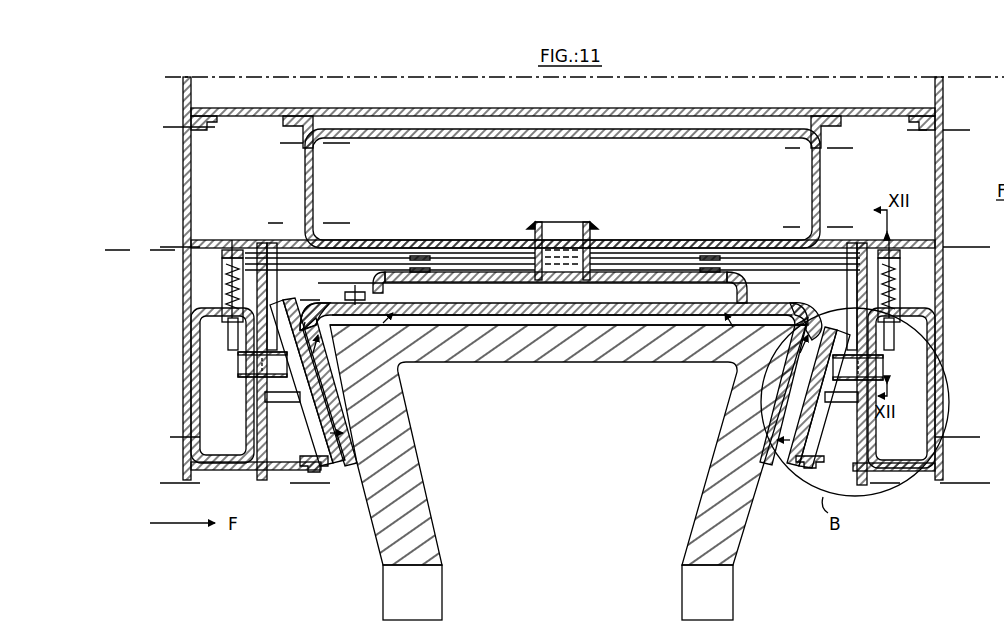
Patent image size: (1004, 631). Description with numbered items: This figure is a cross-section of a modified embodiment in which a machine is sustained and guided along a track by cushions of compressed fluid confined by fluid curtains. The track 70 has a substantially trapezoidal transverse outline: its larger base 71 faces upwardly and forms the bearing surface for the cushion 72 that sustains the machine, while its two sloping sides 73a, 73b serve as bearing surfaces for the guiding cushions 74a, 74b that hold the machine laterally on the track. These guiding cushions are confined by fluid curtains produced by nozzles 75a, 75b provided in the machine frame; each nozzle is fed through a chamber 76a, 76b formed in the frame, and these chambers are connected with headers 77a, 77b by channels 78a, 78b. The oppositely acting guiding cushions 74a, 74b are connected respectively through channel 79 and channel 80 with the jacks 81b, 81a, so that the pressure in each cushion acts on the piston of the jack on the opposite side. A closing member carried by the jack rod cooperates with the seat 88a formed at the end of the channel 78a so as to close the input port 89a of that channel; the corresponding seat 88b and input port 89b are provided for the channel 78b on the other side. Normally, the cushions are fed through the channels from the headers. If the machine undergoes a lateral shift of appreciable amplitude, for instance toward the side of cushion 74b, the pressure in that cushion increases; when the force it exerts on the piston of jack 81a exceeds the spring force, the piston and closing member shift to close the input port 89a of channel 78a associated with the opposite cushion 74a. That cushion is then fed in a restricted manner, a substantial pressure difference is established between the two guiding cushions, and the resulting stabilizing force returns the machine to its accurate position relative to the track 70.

The track 70 is at (703, 468).
The larger base 71 is at (508, 319).
The cushion 72 is at (545, 322).
The sloping side 73a is at (748, 510).
The sloping side 73b is at (373, 533).
The guiding cushion 74a is at (775, 412).
The guiding cushion 74b is at (345, 412).
The nozzle 75a is at (815, 345).
The nozzle 75b is at (318, 312).
The chamber 76a is at (807, 462).
The chamber 76b is at (320, 433).
The header 77a is at (913, 440).
The header 77b is at (200, 430).
The channel 78a is at (886, 378).
The channel 78b is at (250, 388).
The channel 79 is at (373, 256).
The channel 80 is at (452, 262).
The jack 81a is at (905, 285).
The jack 81b is at (218, 282).
The seat 88a is at (887, 387).
The seat 88b is at (247, 388).
The input port 89a is at (888, 360).
The input port 89b is at (250, 367).